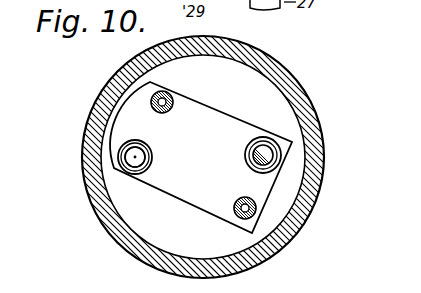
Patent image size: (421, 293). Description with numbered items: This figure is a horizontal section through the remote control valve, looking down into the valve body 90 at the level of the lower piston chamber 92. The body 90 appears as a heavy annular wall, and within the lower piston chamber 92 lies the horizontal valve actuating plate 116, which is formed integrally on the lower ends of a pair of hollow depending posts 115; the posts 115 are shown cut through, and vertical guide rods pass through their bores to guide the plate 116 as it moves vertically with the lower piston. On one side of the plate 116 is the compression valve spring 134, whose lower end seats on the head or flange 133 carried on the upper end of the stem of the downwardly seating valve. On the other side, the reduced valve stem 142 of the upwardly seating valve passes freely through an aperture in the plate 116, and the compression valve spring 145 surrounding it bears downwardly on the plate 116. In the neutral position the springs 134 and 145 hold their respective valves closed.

The body 90 is at (292, 83).
The lower piston chamber 92 is at (287, 120).
The hollow depending posts 115 is at (170, 97).
The valve actuating plate 116 is at (224, 127).
The head or flange 133 is at (134, 157).
The compression valve spring 134 is at (153, 152).
The reduced valve stem 142 is at (273, 153).
The compression valve spring 145 is at (256, 164).